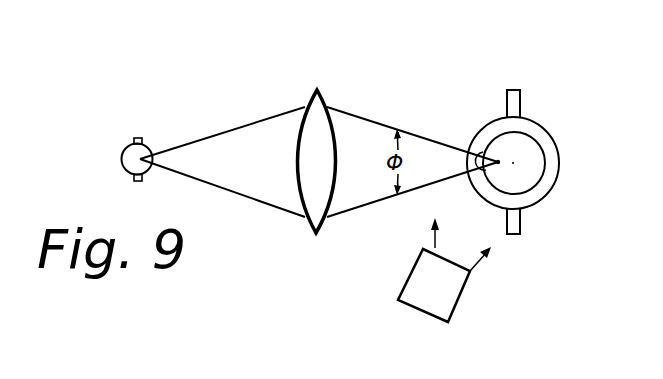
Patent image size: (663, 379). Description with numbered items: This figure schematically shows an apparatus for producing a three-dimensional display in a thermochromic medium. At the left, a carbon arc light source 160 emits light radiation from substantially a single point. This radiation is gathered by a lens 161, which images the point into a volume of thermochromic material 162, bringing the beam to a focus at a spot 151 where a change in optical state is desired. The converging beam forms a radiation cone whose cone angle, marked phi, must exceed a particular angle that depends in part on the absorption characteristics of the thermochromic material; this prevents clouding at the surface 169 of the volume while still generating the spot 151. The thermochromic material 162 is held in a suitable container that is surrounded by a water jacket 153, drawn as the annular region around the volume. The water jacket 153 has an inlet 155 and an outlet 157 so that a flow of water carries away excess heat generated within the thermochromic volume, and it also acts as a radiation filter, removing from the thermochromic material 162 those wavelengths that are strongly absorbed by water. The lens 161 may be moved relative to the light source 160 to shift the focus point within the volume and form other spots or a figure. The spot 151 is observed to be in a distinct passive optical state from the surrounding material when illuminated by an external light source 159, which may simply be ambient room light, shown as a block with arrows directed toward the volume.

The spot 151 is at (497, 166).
The water jacket 153 is at (550, 163).
The inlet 155 is at (518, 90).
The outlet 157 is at (512, 235).
The external light source 159 is at (485, 305).
The carbon arc light source 160 is at (148, 147).
The lens 161 is at (322, 122).
The thermochromic material 162 is at (532, 148).
The surface 169 is at (485, 157).